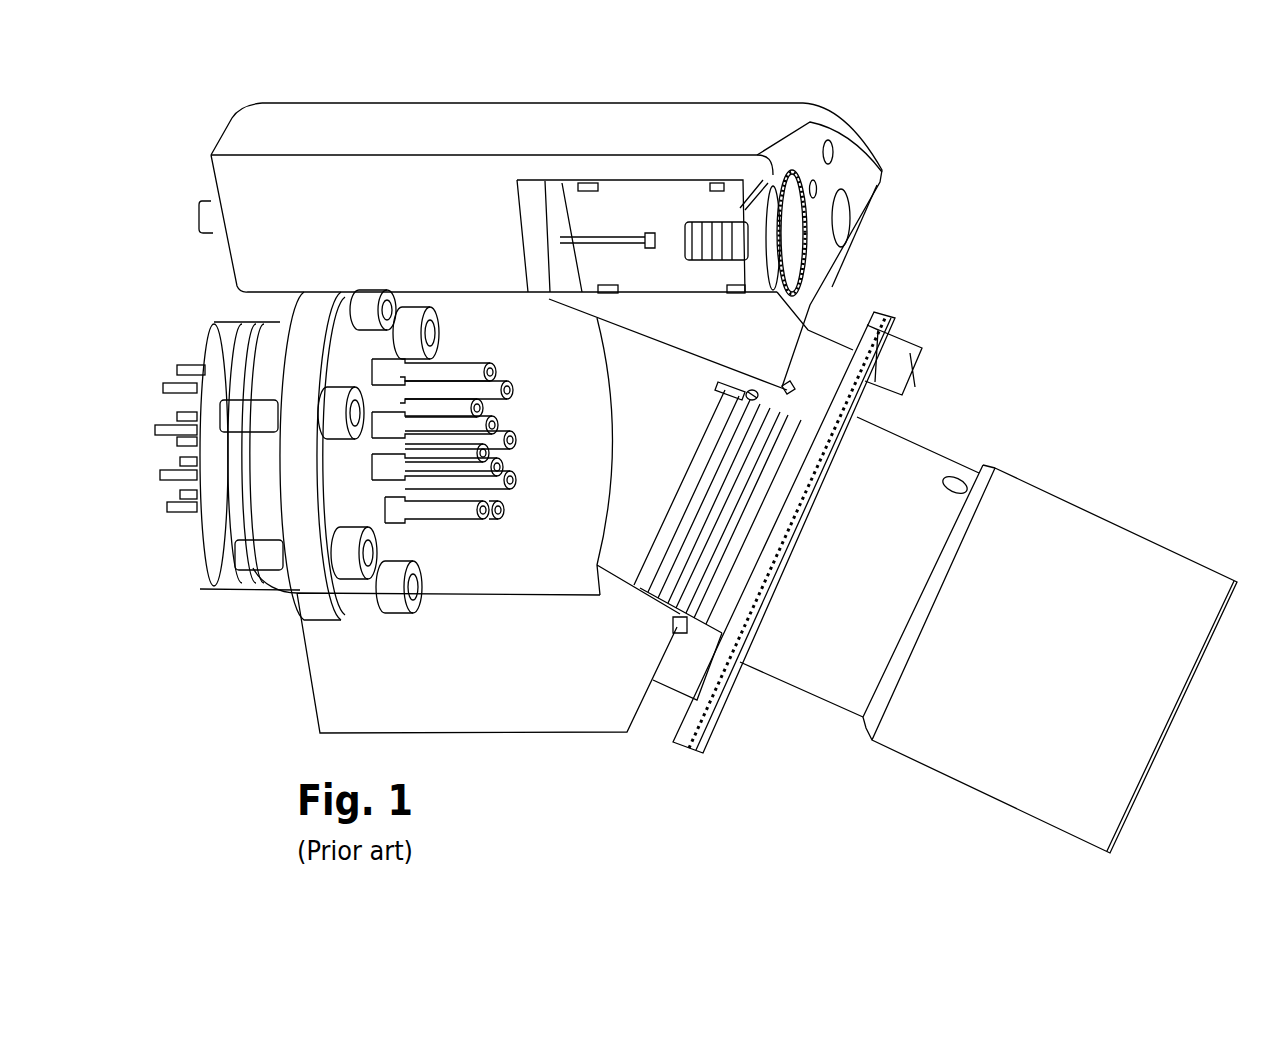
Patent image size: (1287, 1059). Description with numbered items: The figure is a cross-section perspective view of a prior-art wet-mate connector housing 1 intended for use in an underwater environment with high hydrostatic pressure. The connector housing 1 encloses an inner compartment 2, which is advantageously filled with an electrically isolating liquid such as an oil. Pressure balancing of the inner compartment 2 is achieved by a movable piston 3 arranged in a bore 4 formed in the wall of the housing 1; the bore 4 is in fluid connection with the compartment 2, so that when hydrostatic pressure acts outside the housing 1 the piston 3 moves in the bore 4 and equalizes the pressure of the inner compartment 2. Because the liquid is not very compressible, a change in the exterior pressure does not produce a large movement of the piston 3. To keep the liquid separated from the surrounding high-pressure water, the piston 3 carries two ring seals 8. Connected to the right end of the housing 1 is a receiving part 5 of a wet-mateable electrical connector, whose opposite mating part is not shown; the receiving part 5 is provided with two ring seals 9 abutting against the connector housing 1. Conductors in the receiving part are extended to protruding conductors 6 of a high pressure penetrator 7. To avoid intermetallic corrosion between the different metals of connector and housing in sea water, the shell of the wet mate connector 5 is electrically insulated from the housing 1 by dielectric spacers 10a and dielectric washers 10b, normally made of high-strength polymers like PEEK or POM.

The wet-mate connector housing 1 is at (139, 127).
The inner compartment 2 is at (572, 449).
The movable piston 3 is at (657, 200).
The bore 4 is at (627, 188).
The receiving part 5 is at (1073, 563).
The protruding conductors 6 is at (467, 515).
The high pressure penetrator 7 is at (260, 460).
The ring seals 8 is at (578, 183).
The ring seals 9 is at (790, 384).
The dielectric spacers 10a is at (853, 320).
The dielectric washers 10b is at (887, 343).